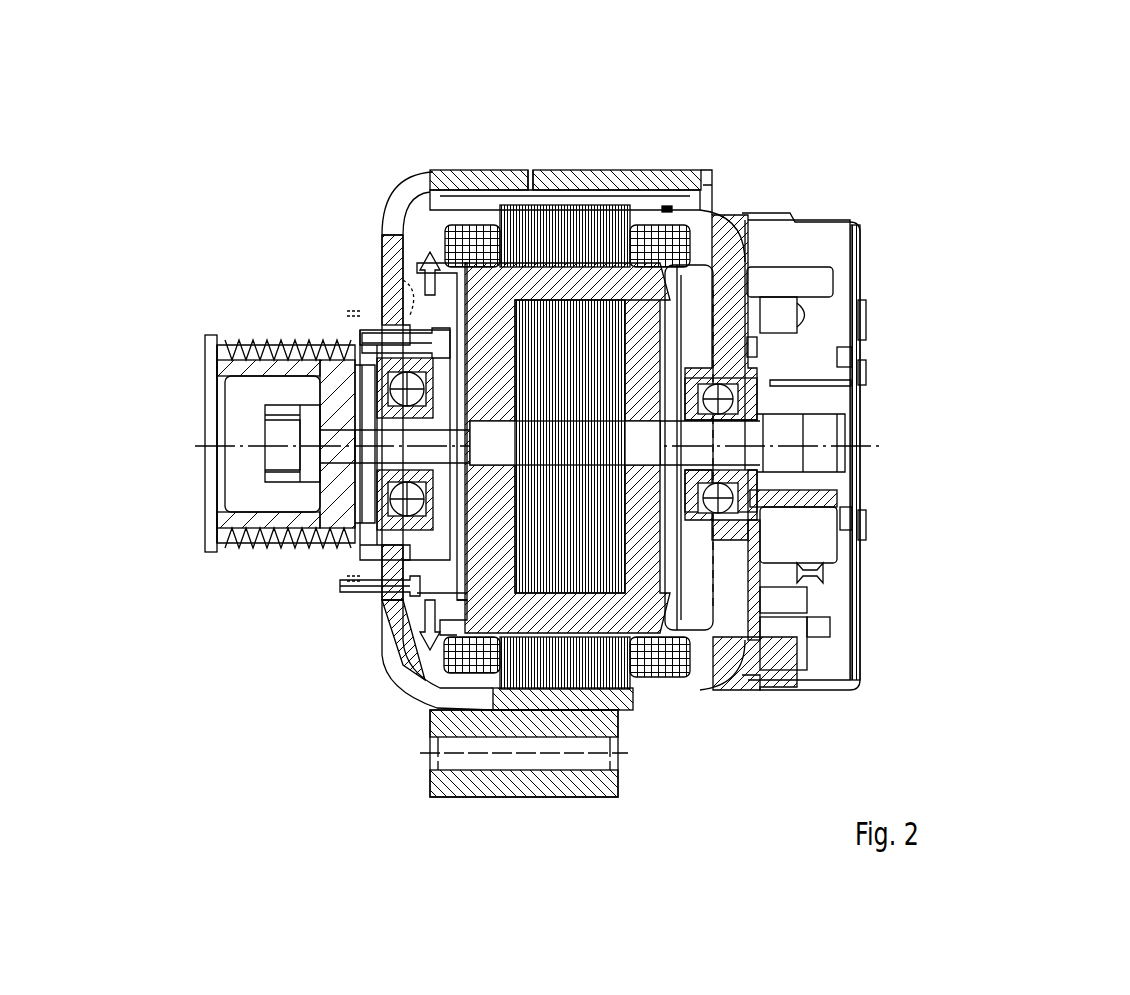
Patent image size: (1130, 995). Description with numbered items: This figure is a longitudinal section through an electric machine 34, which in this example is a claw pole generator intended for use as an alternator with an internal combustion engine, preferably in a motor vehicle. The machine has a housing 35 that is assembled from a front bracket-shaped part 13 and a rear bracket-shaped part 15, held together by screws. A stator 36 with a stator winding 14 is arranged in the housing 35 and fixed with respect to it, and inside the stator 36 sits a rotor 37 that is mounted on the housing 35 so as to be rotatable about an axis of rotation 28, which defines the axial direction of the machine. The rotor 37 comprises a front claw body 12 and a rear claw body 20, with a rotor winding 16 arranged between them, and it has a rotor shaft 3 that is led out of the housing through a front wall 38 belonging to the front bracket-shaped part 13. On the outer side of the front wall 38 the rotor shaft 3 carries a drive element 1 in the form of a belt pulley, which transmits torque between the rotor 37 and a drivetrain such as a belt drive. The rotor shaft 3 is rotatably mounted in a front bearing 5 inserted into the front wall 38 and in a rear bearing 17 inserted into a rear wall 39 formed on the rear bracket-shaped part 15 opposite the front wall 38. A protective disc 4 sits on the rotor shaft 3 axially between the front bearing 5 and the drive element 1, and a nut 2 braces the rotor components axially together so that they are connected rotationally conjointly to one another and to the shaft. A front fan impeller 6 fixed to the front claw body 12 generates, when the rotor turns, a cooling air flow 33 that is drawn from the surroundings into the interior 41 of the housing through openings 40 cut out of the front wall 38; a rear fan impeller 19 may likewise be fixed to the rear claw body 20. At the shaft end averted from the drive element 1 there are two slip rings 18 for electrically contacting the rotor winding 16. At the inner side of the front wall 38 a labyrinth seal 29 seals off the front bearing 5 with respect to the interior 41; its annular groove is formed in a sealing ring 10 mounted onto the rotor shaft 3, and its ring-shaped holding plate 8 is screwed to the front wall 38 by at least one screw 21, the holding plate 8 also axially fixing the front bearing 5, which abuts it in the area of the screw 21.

The drive element 1 is at (325, 405).
The nut 2 is at (283, 441).
The rotor shaft 3 is at (340, 462).
The protective disc 4 is at (226, 338).
The front bearing 5 is at (360, 322).
The front fan impeller 6 is at (430, 700).
The holding plate 8 is at (356, 557).
The sealing ring 10 is at (340, 547).
The front claw body 12 is at (503, 297).
The front bracket-shaped part 13 is at (385, 220).
The stator winding 14 is at (547, 207).
The rear bracket-shaped part 15 is at (632, 170).
The rotor winding 16 is at (672, 302).
The rear bearing 17 is at (857, 262).
The slip rings 18 is at (858, 377).
The rear fan impeller 19 is at (858, 528).
The rear claw body 20 is at (632, 640).
The screw 21 is at (377, 317).
The axis of rotation 28 is at (882, 446).
The labyrinth seal 29 is at (453, 522).
The cooling air flow 33 is at (380, 247).
The electric machine 34 is at (1024, 192).
The housing 35 is at (572, 163).
The stator 36 is at (668, 208).
The rotor 37 is at (745, 283).
The front wall 38 is at (375, 272).
The rear wall 39 is at (858, 314).
The openings 40 is at (375, 590).
The interior 41 is at (458, 318).